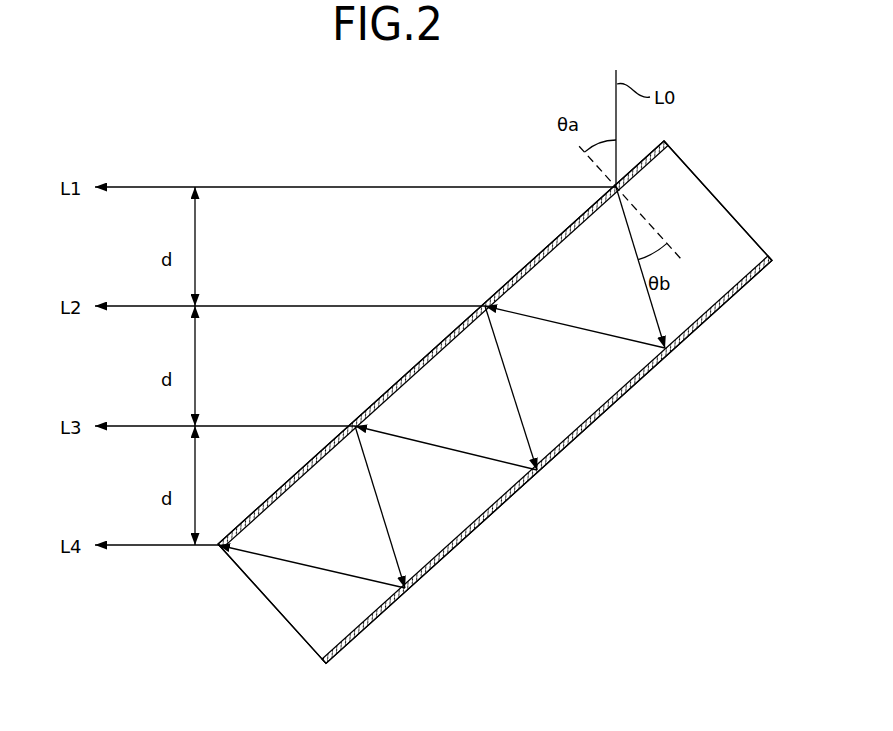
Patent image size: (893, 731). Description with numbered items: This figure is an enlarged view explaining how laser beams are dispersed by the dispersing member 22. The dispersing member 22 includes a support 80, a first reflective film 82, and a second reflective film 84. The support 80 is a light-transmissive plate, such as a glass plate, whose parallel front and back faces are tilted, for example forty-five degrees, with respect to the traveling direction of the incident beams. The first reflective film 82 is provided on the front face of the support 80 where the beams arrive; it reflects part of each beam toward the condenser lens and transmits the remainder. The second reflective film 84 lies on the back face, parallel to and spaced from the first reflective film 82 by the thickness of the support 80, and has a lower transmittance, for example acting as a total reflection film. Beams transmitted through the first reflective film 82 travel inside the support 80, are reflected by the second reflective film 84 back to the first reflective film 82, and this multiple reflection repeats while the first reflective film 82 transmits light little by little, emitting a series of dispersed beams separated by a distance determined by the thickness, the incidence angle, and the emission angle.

The dispersing member 22 is at (178, 597).
The support 80 is at (263, 600).
The first reflective film 82 is at (213, 548).
The second reflective film 84 is at (325, 667).